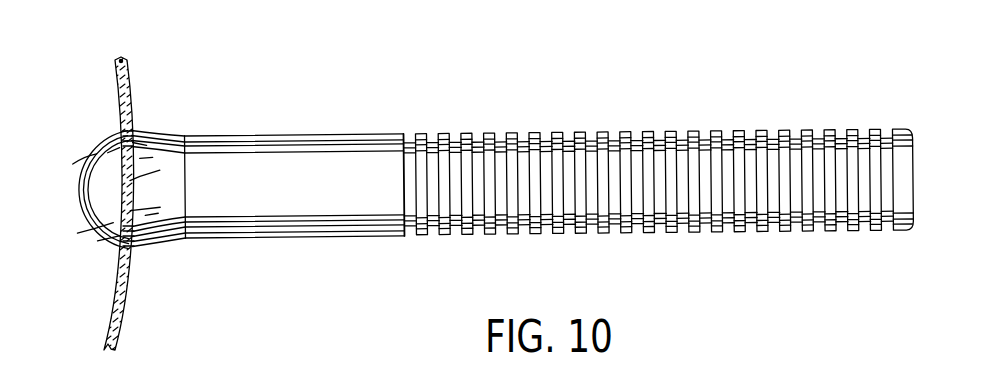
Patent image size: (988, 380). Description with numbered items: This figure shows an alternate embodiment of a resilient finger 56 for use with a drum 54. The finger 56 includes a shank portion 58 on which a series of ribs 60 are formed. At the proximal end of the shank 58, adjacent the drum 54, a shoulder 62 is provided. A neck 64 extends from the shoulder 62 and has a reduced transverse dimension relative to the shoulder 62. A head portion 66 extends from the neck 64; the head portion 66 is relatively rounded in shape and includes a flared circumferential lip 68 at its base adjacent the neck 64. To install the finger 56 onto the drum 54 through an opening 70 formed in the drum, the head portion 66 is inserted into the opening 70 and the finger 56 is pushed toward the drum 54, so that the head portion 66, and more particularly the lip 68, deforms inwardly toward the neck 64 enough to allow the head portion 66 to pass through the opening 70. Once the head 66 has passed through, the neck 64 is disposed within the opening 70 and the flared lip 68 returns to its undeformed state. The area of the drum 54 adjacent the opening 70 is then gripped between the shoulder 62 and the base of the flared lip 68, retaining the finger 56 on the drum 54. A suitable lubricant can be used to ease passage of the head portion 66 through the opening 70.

The drum 54 is at (128, 74).
The finger 56 is at (664, 135).
The shank portion 58 is at (393, 119).
The ribs 60 is at (470, 134).
The shoulder 62 is at (132, 194).
The neck 64 is at (127, 208).
The head portion 66 is at (88, 126).
The flared circumferential lip 68 is at (125, 128).
The opening 70 is at (157, 138).